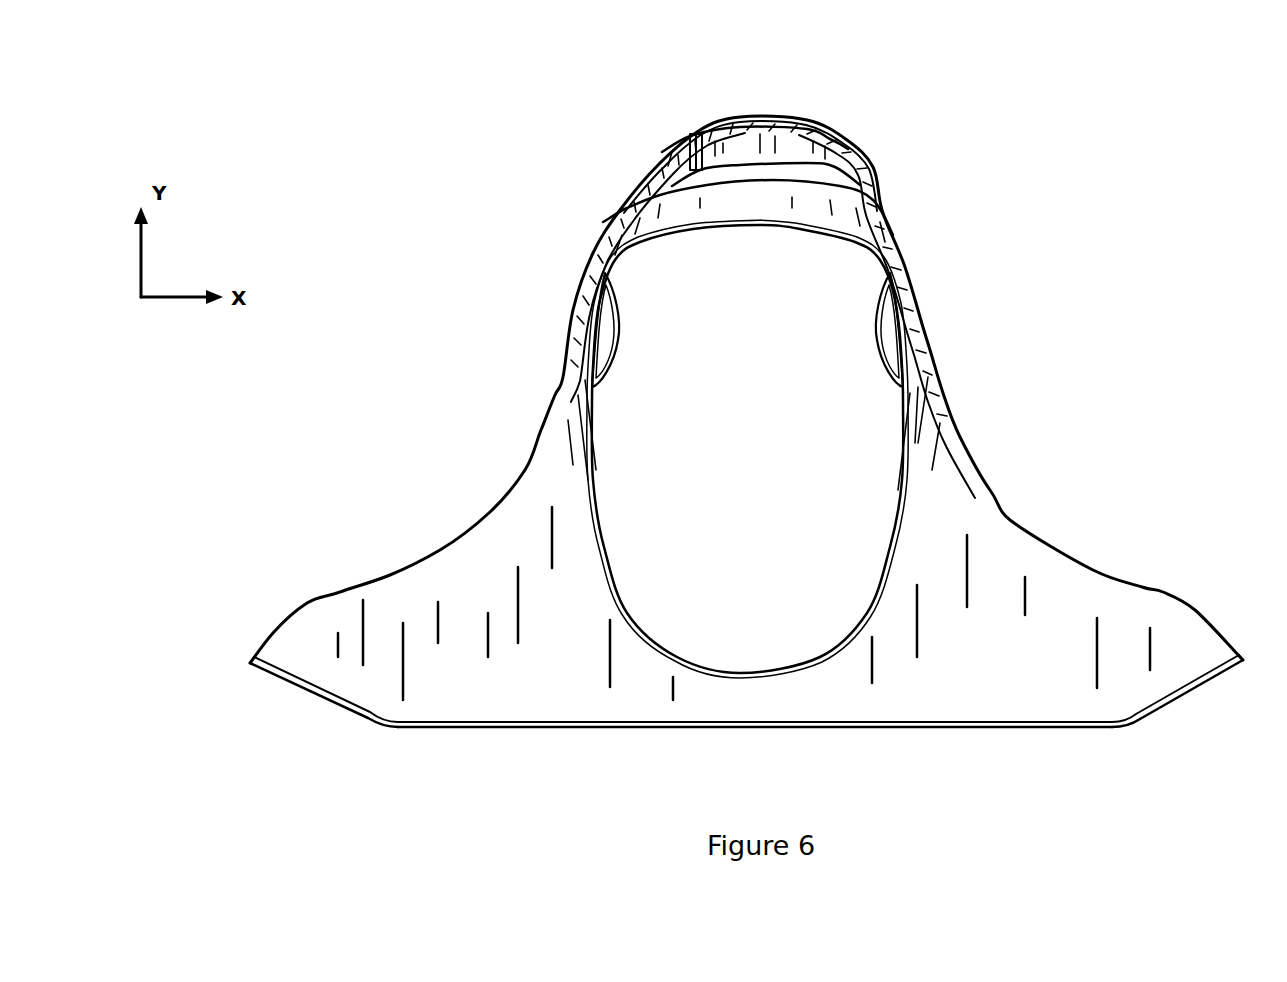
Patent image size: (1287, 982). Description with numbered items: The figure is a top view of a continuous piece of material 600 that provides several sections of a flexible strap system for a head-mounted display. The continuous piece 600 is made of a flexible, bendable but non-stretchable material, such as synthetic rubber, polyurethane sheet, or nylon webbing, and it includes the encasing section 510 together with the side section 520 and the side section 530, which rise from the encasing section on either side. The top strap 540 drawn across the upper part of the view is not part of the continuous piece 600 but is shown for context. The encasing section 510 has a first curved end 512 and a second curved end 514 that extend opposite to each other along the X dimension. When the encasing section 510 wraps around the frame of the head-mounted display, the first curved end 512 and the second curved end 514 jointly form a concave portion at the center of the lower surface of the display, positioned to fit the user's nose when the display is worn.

The continuous piece of material 600 is at (289, 104).
The encasing section 510 is at (1023, 546).
The first curved end 512 is at (286, 699).
The second curved end 514 is at (1200, 712).
The side section 520 is at (577, 318).
The side section 530 is at (922, 348).
The top strap 540 is at (767, 220).